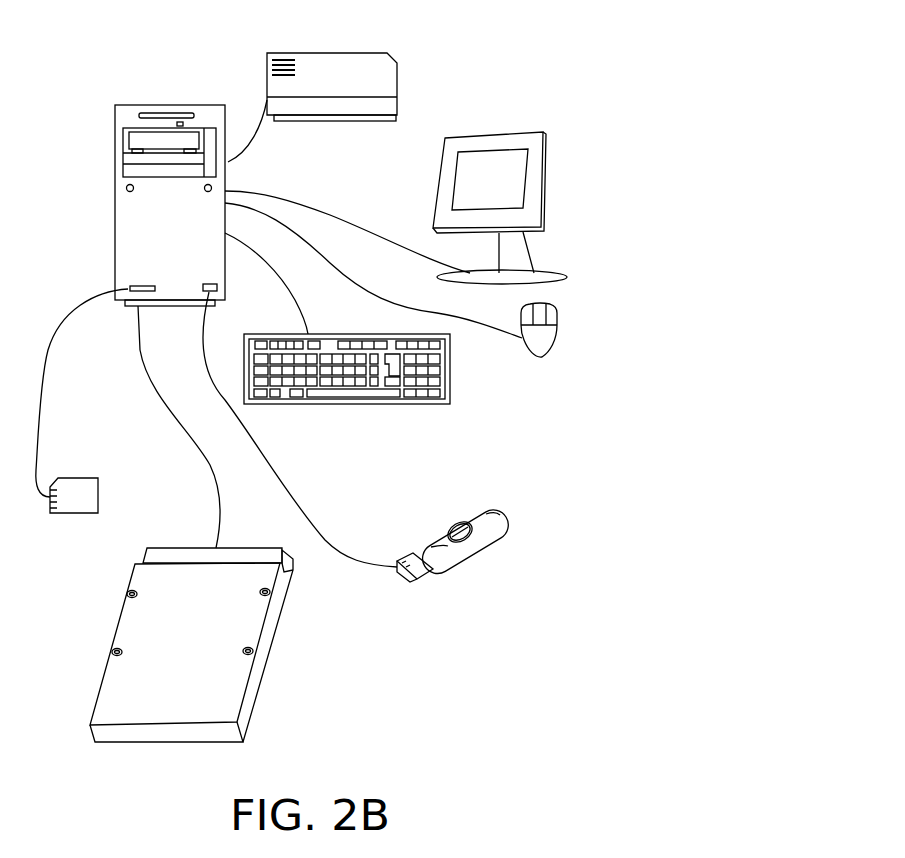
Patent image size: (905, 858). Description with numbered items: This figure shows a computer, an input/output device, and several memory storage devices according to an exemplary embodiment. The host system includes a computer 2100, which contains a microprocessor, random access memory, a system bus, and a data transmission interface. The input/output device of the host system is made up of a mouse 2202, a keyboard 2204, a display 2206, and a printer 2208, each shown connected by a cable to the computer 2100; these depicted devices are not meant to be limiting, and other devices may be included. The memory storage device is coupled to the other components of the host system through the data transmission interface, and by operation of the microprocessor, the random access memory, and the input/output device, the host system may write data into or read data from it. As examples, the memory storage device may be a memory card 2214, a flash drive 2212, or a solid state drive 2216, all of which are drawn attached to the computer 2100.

The computer 2100 is at (171, 104).
The mouse 2202 is at (557, 334).
The keyboard 2204 is at (450, 380).
The display 2206 is at (502, 133).
The printer 2208 is at (330, 53).
The flash drive 2212 is at (447, 532).
The memory card 2214 is at (99, 487).
The solid state drive (SSD) 2216 is at (247, 533).